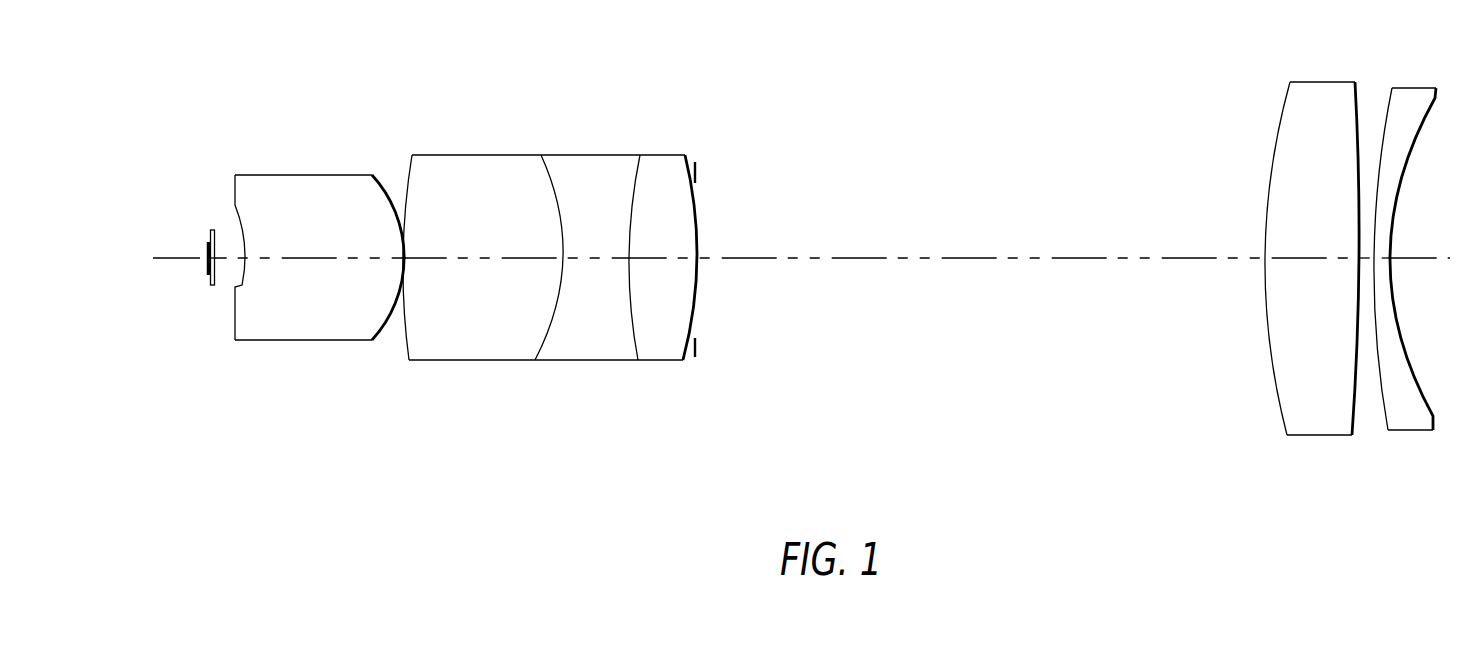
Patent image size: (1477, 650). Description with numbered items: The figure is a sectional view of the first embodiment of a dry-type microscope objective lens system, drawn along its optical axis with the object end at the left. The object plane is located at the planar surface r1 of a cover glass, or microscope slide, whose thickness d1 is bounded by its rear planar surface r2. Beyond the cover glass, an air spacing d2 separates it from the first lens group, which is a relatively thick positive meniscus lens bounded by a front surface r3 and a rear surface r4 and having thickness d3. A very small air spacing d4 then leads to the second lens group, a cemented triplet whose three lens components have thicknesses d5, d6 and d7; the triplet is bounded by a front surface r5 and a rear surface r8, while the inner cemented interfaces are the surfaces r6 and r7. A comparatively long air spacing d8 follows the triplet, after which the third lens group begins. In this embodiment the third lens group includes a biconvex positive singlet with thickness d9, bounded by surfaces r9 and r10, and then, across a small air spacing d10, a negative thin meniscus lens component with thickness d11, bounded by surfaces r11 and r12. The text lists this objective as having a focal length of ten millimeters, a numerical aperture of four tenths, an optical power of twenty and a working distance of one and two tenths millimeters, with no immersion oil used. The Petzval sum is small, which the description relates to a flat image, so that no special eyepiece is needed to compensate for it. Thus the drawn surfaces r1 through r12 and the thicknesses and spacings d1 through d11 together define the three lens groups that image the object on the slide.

The cover glass thickness d1 is at (210, 238).
The air spacing between cover glass and first lens group d2 is at (223, 257).
The thickness of positive meniscus lens d3 is at (308, 257).
The air spacing between first and second lens groups d4 is at (404, 248).
The thickness of first triplet component d5 is at (462, 258).
The thickness of second triplet component d6 is at (592, 258).
The thickness of third triplet component d7 is at (652, 258).
The air spacing between second and third lens groups d8 is at (868, 258).
The thickness of biconvex positive singlet d9 is at (1307, 258).
The air spacing between singlet and negative meniscus d10 is at (1362, 258).
The thickness of negative thin meniscus lens component d11 is at (1377, 258).
The object plane surface r1 is at (208, 283).
The rear surface of cover glass r2 is at (220, 283).
The front surface of positive meniscus lens r3 is at (245, 283).
The rear surface of positive meniscus lens r4 is at (392, 298).
The front surface of cemented triplet r5 is at (409, 337).
The first cemented surface of triplet r6 is at (556, 328).
The second cemented surface of triplet r7 is at (640, 332).
The rear surface of cemented triplet r8 is at (690, 331).
The front surface of biconvex singlet r9 is at (1272, 367).
The rear surface of biconvex singlet r10 is at (1353, 377).
The front surface of negative meniscus lens r11 is at (1384, 412).
The rear surface of negative meniscus lens r12 is at (1427, 403).